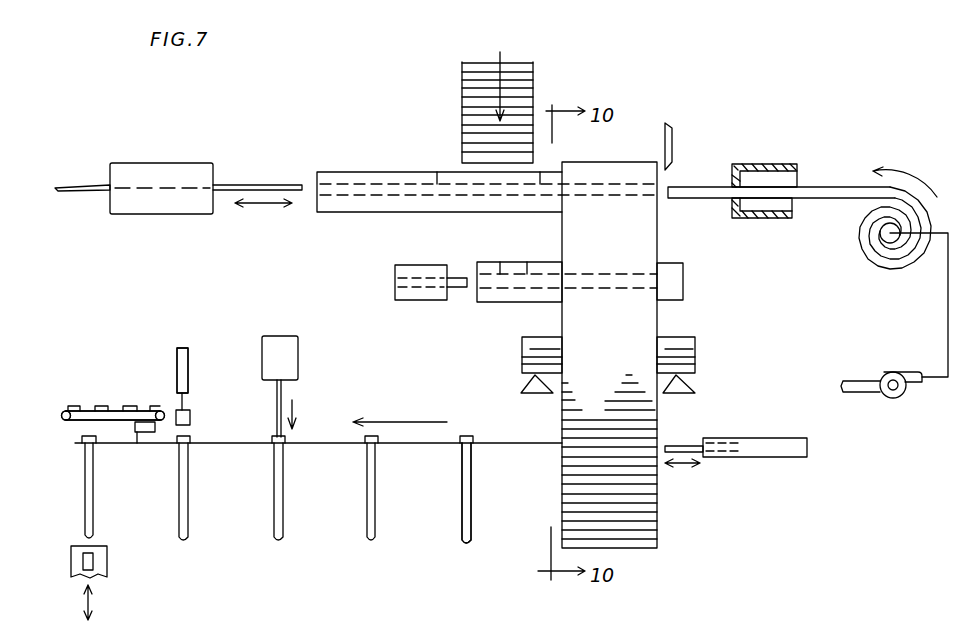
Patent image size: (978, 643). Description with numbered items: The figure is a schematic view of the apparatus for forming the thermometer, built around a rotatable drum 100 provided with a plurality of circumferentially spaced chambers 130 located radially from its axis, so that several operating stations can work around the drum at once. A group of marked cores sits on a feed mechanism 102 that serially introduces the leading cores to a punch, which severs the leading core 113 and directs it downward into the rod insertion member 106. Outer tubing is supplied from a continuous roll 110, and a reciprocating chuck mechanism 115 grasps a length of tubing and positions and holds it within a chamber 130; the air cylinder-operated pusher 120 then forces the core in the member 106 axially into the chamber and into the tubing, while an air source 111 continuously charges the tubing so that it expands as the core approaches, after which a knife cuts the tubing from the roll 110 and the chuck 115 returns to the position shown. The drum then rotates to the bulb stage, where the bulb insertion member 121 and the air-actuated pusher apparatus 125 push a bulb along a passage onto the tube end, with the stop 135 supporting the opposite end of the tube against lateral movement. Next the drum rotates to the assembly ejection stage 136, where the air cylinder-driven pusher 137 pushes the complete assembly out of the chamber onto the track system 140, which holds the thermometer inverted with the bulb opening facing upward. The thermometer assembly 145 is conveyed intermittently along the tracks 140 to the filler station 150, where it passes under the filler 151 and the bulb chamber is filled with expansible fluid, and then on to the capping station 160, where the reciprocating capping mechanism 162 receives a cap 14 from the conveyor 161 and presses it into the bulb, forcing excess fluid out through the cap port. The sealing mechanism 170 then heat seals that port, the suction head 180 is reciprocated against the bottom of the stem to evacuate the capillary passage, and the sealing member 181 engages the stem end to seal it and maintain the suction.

The cap 14 is at (131, 407).
The rotatable drum 100 is at (673, 534).
The feed mechanism 102 is at (450, 84).
The rod insertion member 106 is at (362, 171).
The continuous roll 110 is at (858, 278).
The air source 111 is at (897, 402).
The leading core 113 is at (672, 140).
The reciprocating chuck mechanism 115 is at (760, 165).
The air cylinder-operated pusher 120 is at (242, 165).
The bulb insertion member 121 is at (510, 294).
The air-actuated pusher apparatus 125 is at (395, 273).
The chambers 130 is at (638, 203).
The stop 135 is at (683, 272).
The assembly ejection stage 136 is at (693, 482).
The air cylinder-driven pusher 137 is at (693, 437).
The track system 140 is at (507, 447).
The thermometer assembly 145 is at (473, 533).
The filler station 150 is at (304, 330).
The filler 151 is at (283, 394).
The capping station 160 is at (143, 351).
The conveyor 161 is at (73, 418).
The reciprocating capping mechanism 162 is at (190, 372).
The sealing mechanism 170 is at (137, 444).
The suction head 180 is at (107, 565).
The sealing member 181 is at (73, 565).